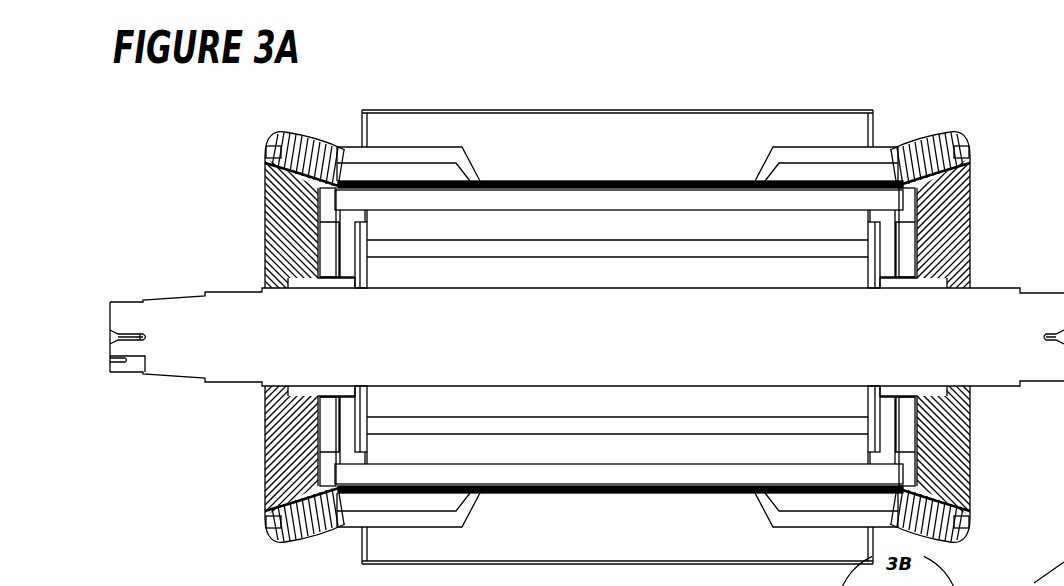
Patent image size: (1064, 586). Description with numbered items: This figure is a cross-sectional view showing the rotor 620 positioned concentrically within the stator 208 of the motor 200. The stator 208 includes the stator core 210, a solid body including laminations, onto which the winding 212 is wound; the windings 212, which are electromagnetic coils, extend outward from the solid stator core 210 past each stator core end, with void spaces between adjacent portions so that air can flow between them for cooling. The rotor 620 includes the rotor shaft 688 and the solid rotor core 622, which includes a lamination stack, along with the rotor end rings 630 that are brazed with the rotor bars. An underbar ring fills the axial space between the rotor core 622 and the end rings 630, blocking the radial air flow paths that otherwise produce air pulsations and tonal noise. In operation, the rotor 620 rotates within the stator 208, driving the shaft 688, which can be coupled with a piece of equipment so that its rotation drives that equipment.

The motor 200 is at (1020, 80).
The stator 208 is at (916, 107).
The stator core 210 is at (722, 110).
The winding 212 is at (303, 146).
The rotor 620 is at (936, 233).
The rotor core 622 is at (803, 213).
The end rings 630 is at (920, 203).
The rotor shaft 688 is at (223, 290).